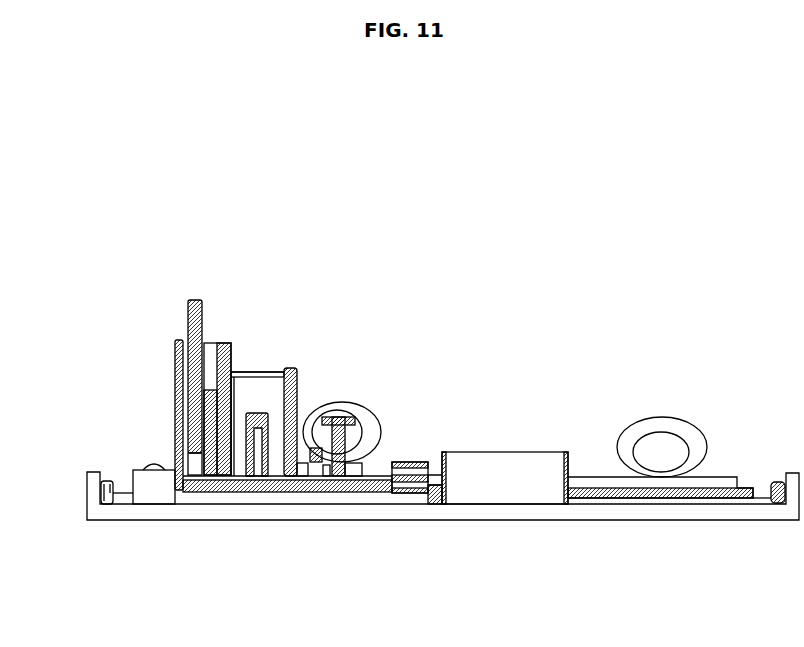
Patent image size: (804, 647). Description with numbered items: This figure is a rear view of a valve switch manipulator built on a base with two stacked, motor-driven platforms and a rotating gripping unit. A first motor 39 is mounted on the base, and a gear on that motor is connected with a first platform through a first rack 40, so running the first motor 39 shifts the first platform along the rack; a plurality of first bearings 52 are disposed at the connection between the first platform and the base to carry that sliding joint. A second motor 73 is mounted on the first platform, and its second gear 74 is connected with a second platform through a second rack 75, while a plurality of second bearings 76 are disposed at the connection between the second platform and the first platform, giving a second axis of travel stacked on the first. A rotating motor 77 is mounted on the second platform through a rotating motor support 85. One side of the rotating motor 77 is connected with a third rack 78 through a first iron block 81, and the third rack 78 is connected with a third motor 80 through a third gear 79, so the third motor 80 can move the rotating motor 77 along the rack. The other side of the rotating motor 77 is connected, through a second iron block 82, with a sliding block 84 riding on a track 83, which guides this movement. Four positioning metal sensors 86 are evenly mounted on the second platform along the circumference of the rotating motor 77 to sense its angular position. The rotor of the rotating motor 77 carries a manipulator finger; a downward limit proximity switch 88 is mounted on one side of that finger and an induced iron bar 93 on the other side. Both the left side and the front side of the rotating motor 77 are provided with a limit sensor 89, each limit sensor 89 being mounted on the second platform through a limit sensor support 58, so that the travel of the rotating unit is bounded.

The first motor 39 is at (455, 452).
The first rack 40 is at (405, 462).
The first bearings 52 is at (104, 481).
The limit sensor support 58 is at (353, 400).
The second motor 73 is at (672, 417).
The second gear 74 is at (640, 421).
The second rack 75 is at (583, 477).
The second bearings 76 is at (155, 464).
The rotating motor 77 is at (273, 372).
The third rack 78 is at (298, 478).
The third gear 79 is at (340, 402).
The third motor 80 is at (348, 403).
The first iron block 81 is at (292, 368).
The second iron block 82 is at (228, 343).
The track 83 is at (195, 300).
The sliding block 84 is at (208, 476).
The rotating motor support 85 is at (176, 455).
The positioning metal sensors 86 is at (315, 448).
The downward limit proximity switch 88 is at (260, 476).
The limit sensor 89 is at (258, 413).
The induced iron bar 93 is at (249, 410).